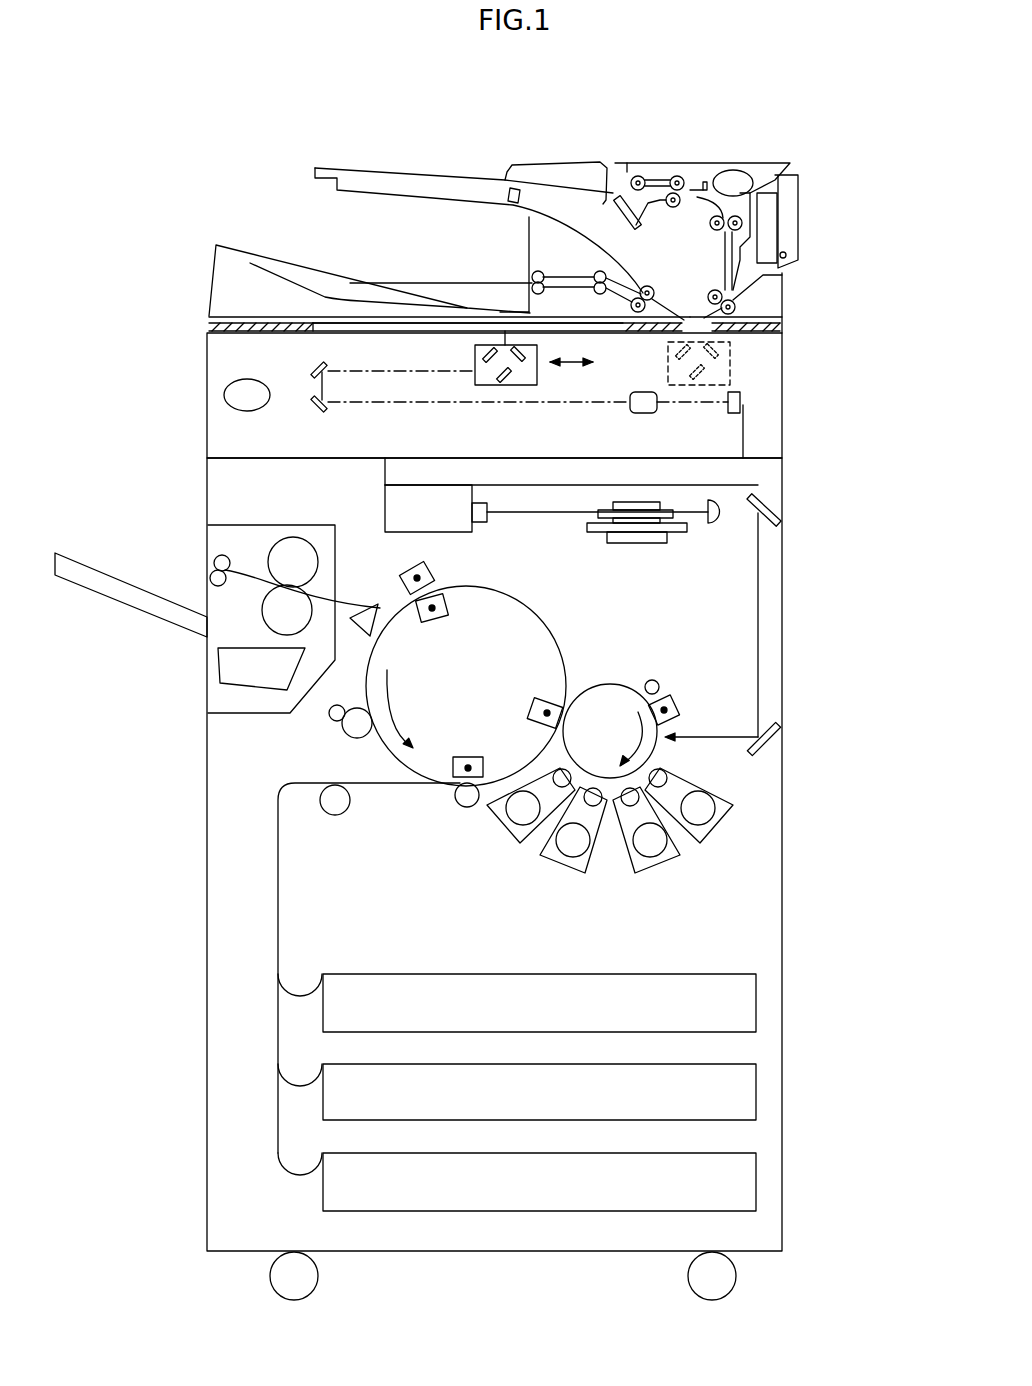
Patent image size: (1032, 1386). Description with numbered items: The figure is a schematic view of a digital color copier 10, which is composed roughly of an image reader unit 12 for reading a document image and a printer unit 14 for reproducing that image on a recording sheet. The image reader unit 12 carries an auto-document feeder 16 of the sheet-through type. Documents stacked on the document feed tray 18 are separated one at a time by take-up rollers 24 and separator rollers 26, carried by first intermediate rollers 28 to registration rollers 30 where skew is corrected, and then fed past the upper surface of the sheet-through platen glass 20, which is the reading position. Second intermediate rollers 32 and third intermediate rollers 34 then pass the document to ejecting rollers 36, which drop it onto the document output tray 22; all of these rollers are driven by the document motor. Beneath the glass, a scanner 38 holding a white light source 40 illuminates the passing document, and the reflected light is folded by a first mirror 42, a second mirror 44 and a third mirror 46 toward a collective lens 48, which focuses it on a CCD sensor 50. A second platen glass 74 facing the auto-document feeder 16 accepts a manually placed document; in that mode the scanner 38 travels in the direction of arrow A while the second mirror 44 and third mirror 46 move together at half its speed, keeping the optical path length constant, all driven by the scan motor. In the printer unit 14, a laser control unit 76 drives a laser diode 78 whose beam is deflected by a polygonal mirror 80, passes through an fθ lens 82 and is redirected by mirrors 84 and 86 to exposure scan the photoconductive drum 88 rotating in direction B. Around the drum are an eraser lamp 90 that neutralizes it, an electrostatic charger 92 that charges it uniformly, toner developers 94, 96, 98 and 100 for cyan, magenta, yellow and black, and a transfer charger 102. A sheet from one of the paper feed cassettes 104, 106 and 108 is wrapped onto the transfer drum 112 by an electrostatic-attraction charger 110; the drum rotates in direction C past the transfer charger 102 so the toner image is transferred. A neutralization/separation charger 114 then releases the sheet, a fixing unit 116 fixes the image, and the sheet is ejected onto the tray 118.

The digital color copier 10 is at (252, 81).
The image reader unit 12 is at (847, 350).
The printer unit 14 is at (847, 703).
The auto-document feeder 16 is at (252, 225).
The document feed tray 18 is at (434, 177).
The sheet-through platen glass 20 is at (712, 336).
The document output tray 22 is at (312, 272).
The take-up rollers 24 is at (638, 176).
The separator rollers 26 is at (692, 178).
The first intermediate rollers 28 is at (710, 223).
The registration rollers 30 is at (712, 290).
The second intermediate rollers 32 is at (649, 286).
The third intermediate rollers 34 is at (596, 271).
The ejecting rollers 36 is at (532, 271).
The scanner 38 is at (539, 368).
The white light source 40 is at (476, 358).
The first mirror 42 is at (497, 382).
The second mirror 44 is at (312, 368).
The third mirror 46 is at (313, 410).
The collective lens 48 is at (630, 410).
The CCD sensor 50 is at (727, 412).
The platen glass 74 is at (377, 328).
The laser control unit 76 is at (385, 503).
The laser diode 78 is at (487, 522).
The polygonal mirror 80 is at (647, 545).
The fθ lens 82 is at (712, 523).
The mirror 84 is at (778, 513).
The mirror 86 is at (770, 742).
The photoconductive drum 88 is at (607, 683).
The eraser lamp 90 is at (653, 680).
The electrostatic charger 92 is at (676, 708).
The toner developer 94 is at (710, 837).
The toner developer 96 is at (648, 868).
The toner developer 98 is at (562, 867).
The toner developer 100 is at (500, 827).
The transfer charger 102 is at (540, 705).
The paper feed cassette 104 is at (489, 974).
The paper feed cassette 106 is at (489, 1064).
The paper feed cassette 108 is at (489, 1153).
The electrostatic-attraction charger 110 is at (465, 757).
The transfer drum 112 is at (547, 627).
The neutralization/separation charger 114 is at (430, 572).
The fixing unit 116 is at (243, 715).
The tray 118 is at (130, 585).